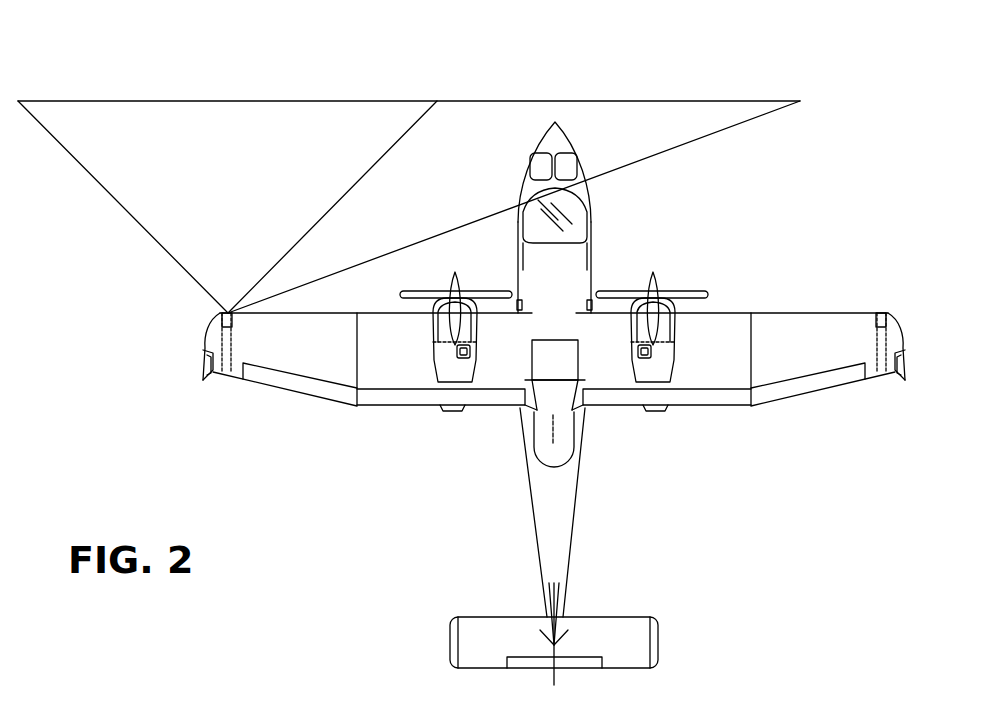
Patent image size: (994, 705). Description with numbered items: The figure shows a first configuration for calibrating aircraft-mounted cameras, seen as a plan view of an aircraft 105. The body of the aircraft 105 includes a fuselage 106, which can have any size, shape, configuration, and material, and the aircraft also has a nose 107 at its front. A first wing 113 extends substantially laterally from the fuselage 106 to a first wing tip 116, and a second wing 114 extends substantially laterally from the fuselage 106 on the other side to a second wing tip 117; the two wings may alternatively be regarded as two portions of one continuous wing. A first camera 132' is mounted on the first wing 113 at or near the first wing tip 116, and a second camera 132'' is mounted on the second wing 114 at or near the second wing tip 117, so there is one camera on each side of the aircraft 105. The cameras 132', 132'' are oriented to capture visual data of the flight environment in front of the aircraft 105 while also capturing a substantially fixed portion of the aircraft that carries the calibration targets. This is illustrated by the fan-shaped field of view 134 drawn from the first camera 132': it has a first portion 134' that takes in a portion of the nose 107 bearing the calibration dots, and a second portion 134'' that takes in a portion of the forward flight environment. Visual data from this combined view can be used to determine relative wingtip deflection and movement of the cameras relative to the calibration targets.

The aircraft 105 is at (488, 455).
The fuselage 106 is at (562, 267).
The nose 107 is at (528, 138).
The first wing 113 is at (304, 400).
The second wing 114 is at (767, 298).
The first wing tip 116 is at (193, 347).
The second wing tip 117 is at (908, 345).
The first camera 132' is at (151, 327).
The second camera 132'' is at (899, 283).
The field of view 134 is at (421, 159).
The first portion 134' is at (526, 177).
The second portion 134'' is at (128, 180).